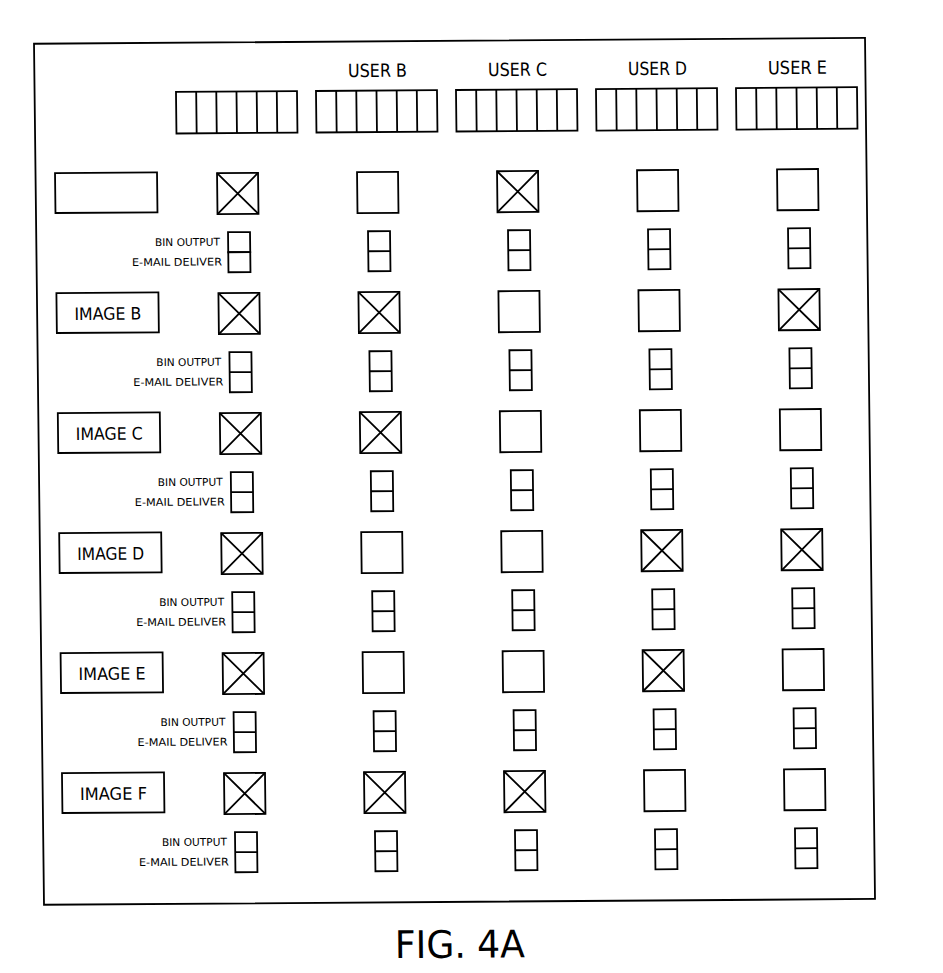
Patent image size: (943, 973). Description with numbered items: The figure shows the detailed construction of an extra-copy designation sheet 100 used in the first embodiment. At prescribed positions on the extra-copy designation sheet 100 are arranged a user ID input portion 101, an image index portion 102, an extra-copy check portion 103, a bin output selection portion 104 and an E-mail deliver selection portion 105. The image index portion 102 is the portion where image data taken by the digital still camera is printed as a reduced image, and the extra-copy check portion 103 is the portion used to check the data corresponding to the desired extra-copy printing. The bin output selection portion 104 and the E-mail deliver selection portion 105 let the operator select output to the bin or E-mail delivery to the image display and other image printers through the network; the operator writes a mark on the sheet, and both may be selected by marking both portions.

The extra-copy designation sheet 100 is at (440, 44).
The user ID input portion 101 is at (198, 73).
The image index portion 102 is at (105, 173).
The extra-copy check portion 103 is at (257, 195).
The bin output selection portion 104 is at (248, 245).
The E-mail deliver selection portion 105 is at (248, 265).